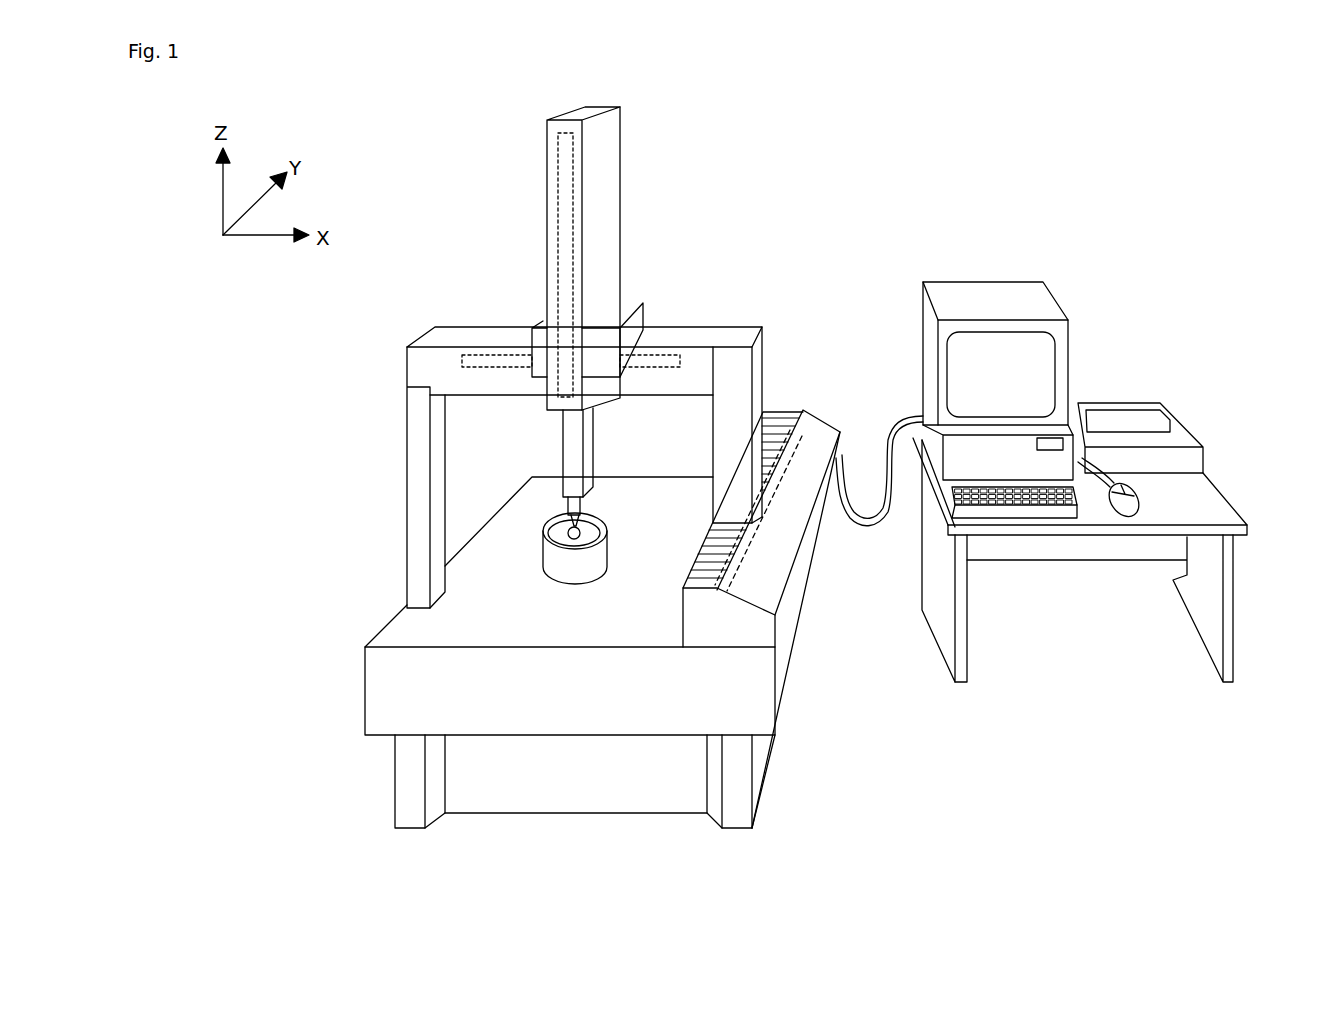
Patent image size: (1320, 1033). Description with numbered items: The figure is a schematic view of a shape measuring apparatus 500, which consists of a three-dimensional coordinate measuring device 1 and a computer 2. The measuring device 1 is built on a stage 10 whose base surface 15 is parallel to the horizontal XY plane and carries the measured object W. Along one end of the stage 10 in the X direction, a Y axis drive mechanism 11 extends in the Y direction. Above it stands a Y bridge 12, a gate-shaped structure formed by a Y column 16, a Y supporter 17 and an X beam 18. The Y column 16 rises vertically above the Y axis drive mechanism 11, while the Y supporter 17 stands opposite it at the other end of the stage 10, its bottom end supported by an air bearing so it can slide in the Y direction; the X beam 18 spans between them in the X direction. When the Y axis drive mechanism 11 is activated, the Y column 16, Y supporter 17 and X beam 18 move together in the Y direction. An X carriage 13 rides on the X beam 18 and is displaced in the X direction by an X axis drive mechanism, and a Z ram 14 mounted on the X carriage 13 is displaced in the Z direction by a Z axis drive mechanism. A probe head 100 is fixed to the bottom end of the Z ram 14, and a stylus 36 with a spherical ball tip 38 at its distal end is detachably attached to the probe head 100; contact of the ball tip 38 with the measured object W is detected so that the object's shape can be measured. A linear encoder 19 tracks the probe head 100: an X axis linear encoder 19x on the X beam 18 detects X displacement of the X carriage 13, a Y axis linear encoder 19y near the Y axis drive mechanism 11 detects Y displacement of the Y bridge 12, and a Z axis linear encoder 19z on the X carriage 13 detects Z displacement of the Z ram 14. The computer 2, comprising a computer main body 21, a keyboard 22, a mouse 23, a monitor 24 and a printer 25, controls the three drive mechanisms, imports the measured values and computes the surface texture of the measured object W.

The shape measuring apparatus 500 is at (830, 155).
The three-dimensional coordinate measuring device 1 is at (672, 182).
The computer 2 is at (1110, 340).
The stage 10 is at (364, 690).
The Y axis drive mechanism 11 is at (840, 432).
The Y bridge 12 is at (505, 318).
The X carriage 13 is at (547, 160).
The Z ram 14 is at (562, 434).
The base surface 15 is at (418, 628).
The Y column 16 is at (766, 342).
The Y supporter 17 is at (410, 494).
The X beam 18 is at (448, 330).
The linear encoder 19 is at (643, 362).
The X axis linear encoder 19x is at (660, 356).
The Y axis linear encoder 19y is at (828, 432).
The Z axis linear encoder 19z is at (560, 242).
The computer main body 21 is at (920, 415).
The keyboard 22 is at (1020, 527).
The mouse 23 is at (1137, 527).
The monitor 24 is at (986, 282).
The printer 25 is at (1185, 440).
The stylus 36 is at (547, 524).
The ball tip 38 is at (595, 548).
The probe head 100 is at (592, 504).
The measured object W is at (548, 572).